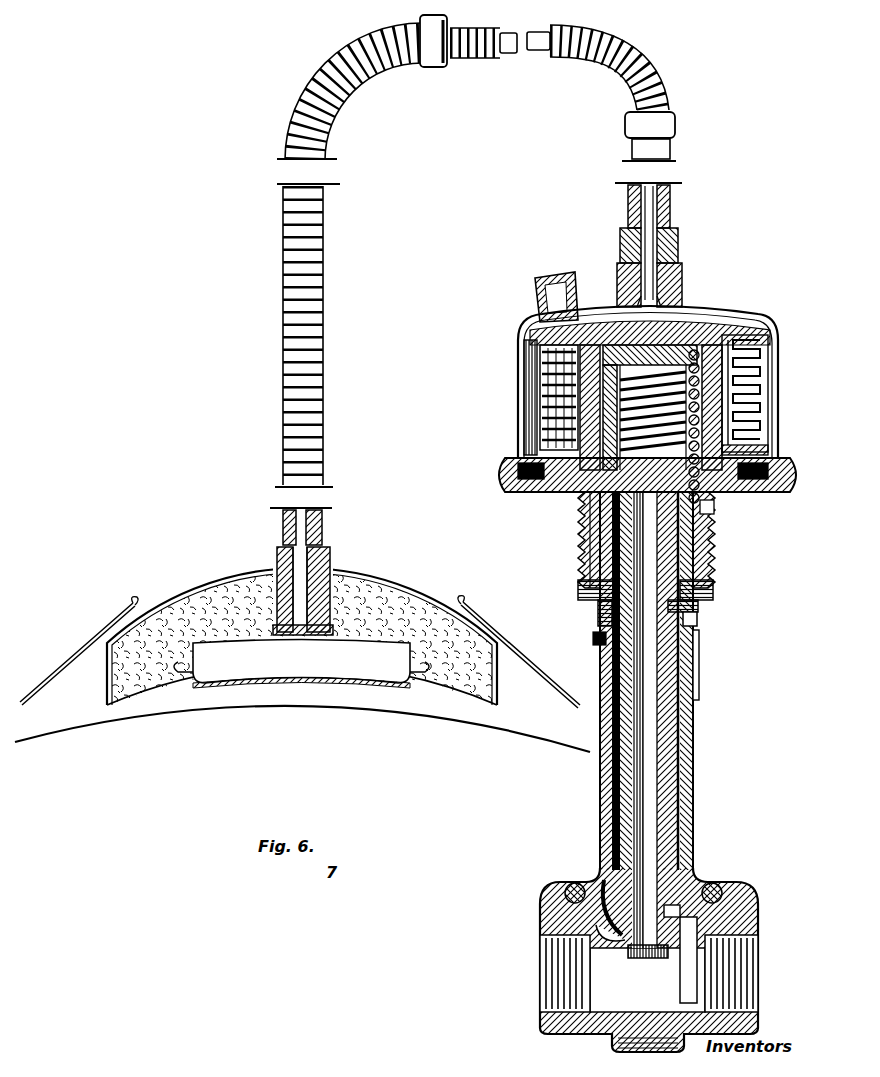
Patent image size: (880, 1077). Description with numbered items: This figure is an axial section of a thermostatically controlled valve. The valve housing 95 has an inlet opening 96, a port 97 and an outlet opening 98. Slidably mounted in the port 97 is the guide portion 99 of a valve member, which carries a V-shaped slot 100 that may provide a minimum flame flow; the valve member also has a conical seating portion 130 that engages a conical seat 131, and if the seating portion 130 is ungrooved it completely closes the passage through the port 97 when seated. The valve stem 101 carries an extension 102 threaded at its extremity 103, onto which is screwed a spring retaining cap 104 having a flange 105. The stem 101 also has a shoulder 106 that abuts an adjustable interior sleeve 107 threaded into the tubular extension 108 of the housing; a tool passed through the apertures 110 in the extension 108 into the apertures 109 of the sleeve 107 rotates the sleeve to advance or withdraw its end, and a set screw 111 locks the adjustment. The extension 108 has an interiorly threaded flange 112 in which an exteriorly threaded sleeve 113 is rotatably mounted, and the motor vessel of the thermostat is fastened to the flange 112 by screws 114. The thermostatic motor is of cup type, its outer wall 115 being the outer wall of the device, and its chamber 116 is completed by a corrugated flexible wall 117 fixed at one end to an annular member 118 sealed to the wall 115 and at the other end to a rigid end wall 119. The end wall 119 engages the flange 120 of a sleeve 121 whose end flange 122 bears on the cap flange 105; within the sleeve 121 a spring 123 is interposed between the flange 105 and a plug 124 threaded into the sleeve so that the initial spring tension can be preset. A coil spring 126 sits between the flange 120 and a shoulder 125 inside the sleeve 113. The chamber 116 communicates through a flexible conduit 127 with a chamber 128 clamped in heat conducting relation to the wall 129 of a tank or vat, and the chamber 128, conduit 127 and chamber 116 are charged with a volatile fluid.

The valve housing 95 is at (698, 882).
The inlet opening 96 is at (735, 978).
The port 97 is at (647, 958).
The outlet opening 98 is at (552, 978).
The guide portion 99 is at (620, 934).
The V-shaped slot 100 is at (690, 928).
The valve stem 101 is at (662, 783).
The extension 102 is at (660, 607).
The threaded extremity 103 is at (680, 507).
The cap 104 is at (580, 487).
The flange 105 is at (583, 507).
The shoulder 106 is at (695, 698).
The adjustable interior sleeve 107 is at (682, 645).
The tubular extension 108 is at (607, 778).
The apertures 109 is at (675, 615).
The apertures 110 is at (607, 608).
The set screw 111 is at (600, 638).
The interiorly threaded flange 112 is at (735, 492).
The exteriorly threaded sleeve 113 is at (708, 547).
The screws 114 is at (520, 473).
The outer wall 115 is at (770, 345).
The thermostatic motor chamber 116 is at (702, 324).
The corrugated flexible wall 117 is at (753, 380).
The annular member 118 is at (747, 450).
The rigid end wall 119 is at (726, 326).
The flange 120 is at (548, 356).
The sleeve 121 is at (597, 400).
The flange 122 is at (700, 498).
The spring 123 is at (670, 422).
The plug 124 is at (655, 355).
The shoulder 125 is at (712, 574).
The coil spring 126 is at (582, 562).
The conduit 127 is at (532, 52).
The chamber 128 is at (270, 646).
The wall 129 is at (78, 716).
The conical seating portion 130 is at (677, 913).
The conical seat 131 is at (596, 918).